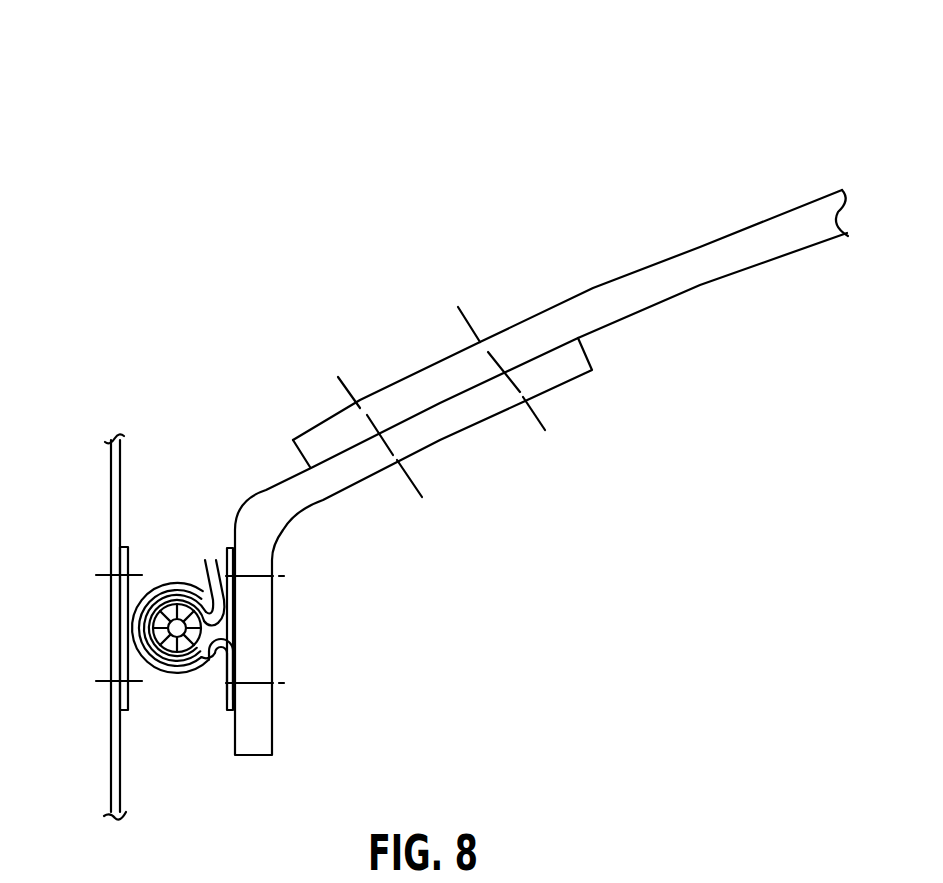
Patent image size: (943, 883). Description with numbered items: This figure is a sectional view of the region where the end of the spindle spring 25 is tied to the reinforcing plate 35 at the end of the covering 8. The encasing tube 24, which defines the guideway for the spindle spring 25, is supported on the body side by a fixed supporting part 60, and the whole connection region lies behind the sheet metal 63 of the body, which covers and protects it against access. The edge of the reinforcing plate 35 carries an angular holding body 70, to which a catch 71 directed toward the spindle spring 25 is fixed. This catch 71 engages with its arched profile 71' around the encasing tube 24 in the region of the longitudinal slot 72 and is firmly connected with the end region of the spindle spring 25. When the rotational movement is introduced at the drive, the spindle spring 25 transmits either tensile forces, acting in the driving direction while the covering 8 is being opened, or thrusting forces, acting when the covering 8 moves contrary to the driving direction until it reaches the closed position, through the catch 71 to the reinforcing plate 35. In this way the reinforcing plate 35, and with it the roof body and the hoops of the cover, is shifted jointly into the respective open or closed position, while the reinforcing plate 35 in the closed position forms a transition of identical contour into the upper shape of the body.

The covering 8 is at (643, 107).
The reinforcing plate 35 is at (757, 225).
The angular holding body 70 is at (323, 497).
The catch 71 is at (215, 572).
The arched profile 71' is at (177, 515).
The longitudinal slot 72 is at (213, 647).
The encasing tube 24 is at (187, 672).
The spindle spring 25 is at (156, 634).
The fixed supporting part 60 is at (120, 595).
The sheet metal 63 is at (110, 458).